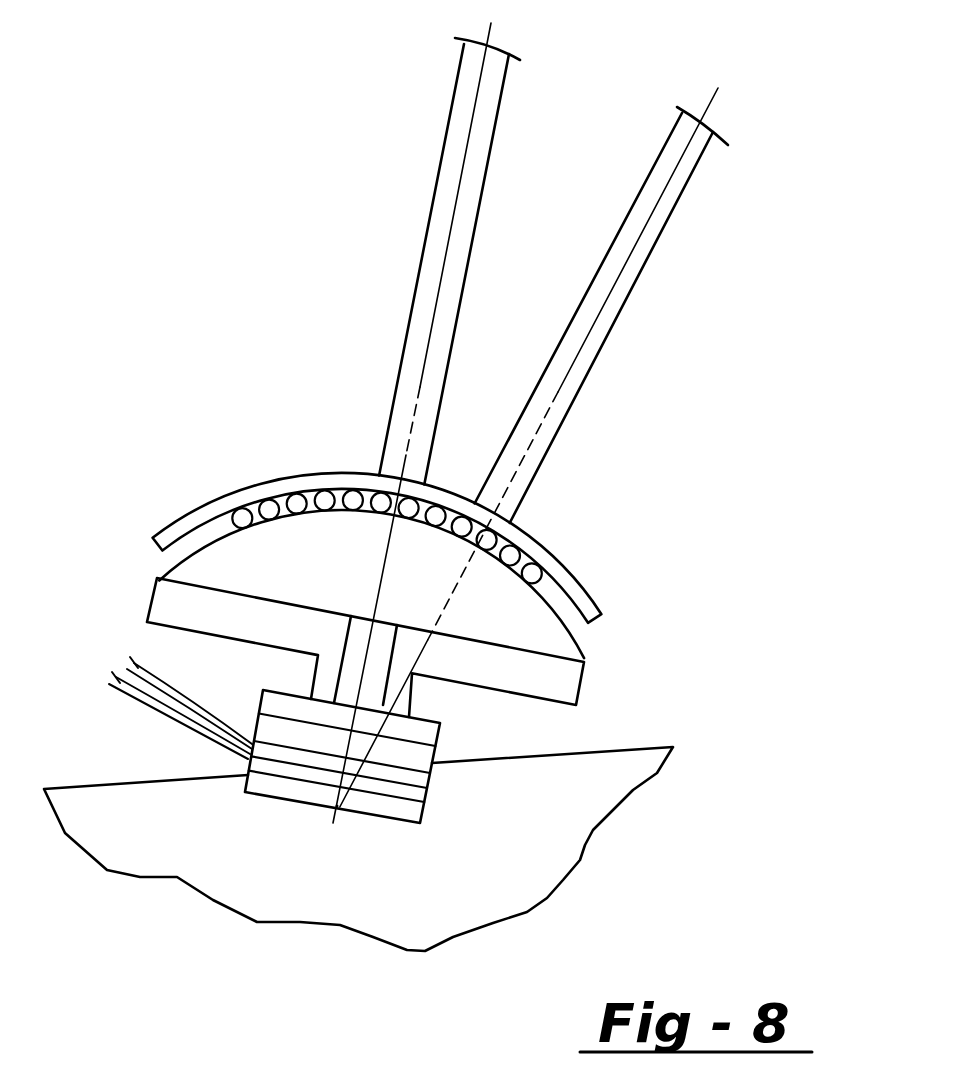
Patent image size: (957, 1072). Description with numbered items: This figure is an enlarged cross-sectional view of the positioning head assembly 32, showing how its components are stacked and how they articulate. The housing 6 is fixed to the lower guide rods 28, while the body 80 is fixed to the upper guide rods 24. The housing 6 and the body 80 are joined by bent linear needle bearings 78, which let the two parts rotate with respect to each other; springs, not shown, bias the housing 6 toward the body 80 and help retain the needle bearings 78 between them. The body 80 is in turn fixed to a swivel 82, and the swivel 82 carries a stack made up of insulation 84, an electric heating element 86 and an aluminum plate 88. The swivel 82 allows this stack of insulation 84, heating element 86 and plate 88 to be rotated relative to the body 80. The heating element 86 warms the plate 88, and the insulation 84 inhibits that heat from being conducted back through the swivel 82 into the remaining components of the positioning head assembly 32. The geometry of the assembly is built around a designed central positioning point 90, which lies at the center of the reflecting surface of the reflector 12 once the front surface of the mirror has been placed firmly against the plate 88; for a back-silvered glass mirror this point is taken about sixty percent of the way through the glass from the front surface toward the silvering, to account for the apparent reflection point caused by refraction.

The upper guide rods 24 is at (433, 178).
The lower guide rods 28 is at (673, 208).
The housing 6 is at (208, 512).
The bearings 78 is at (533, 567).
The body 80 is at (508, 617).
The swivel 82 is at (392, 640).
The positioning head assembly 32 is at (618, 558).
The insulation 84 is at (418, 753).
The heating element 86 is at (420, 783).
The plate 88 is at (427, 793).
The reflector 12 is at (262, 788).
The central positioning point 90 is at (337, 807).